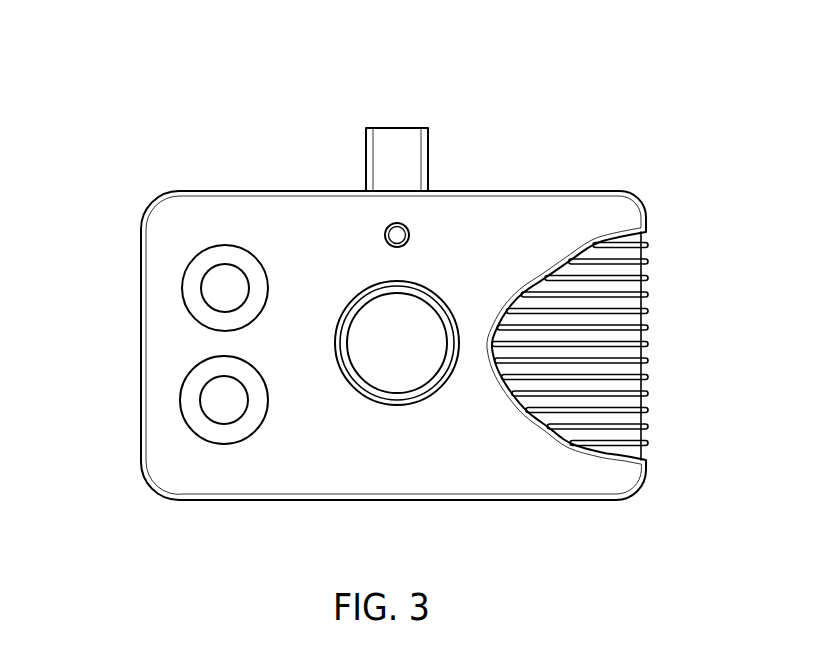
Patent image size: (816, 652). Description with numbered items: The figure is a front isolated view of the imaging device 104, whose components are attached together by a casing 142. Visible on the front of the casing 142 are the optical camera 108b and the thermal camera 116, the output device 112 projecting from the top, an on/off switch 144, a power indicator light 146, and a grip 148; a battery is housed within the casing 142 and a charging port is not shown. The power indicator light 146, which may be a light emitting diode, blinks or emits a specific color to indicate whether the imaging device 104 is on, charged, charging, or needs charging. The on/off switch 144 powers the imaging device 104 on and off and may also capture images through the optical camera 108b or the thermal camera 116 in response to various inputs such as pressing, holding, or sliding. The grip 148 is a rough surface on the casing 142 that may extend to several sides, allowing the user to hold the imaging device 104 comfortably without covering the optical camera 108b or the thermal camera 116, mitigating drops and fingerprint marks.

The imaging device 104 is at (164, 85).
The output device 112 is at (400, 148).
The casing 142 is at (275, 205).
The power indicator light 146 is at (412, 234).
The thermal camera 116 is at (200, 288).
The optical camera 108b is at (200, 400).
The on/off switch 144 is at (390, 407).
The grip 148 is at (648, 311).